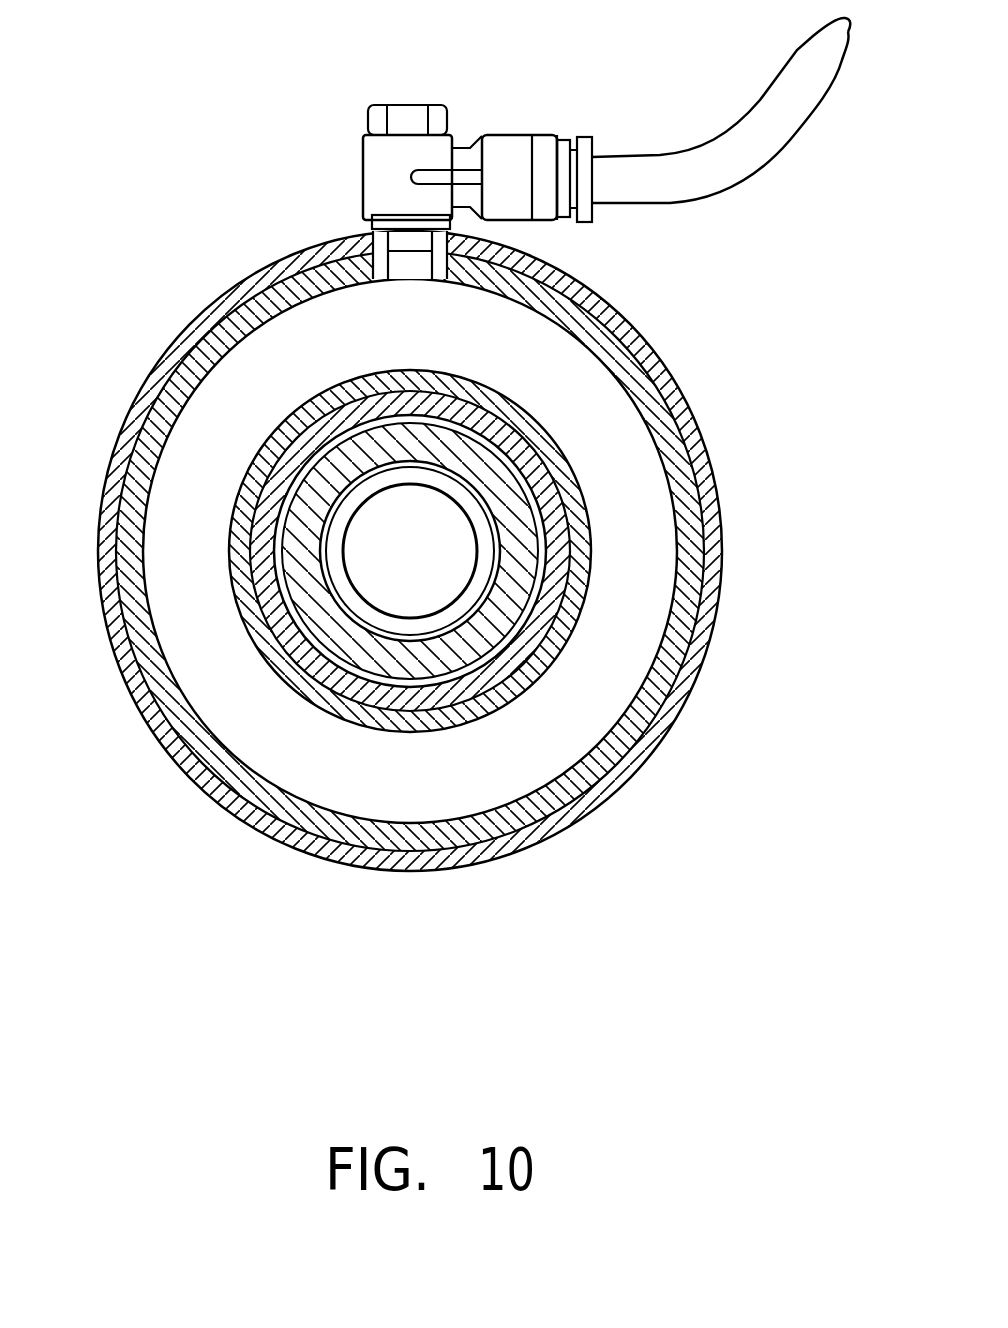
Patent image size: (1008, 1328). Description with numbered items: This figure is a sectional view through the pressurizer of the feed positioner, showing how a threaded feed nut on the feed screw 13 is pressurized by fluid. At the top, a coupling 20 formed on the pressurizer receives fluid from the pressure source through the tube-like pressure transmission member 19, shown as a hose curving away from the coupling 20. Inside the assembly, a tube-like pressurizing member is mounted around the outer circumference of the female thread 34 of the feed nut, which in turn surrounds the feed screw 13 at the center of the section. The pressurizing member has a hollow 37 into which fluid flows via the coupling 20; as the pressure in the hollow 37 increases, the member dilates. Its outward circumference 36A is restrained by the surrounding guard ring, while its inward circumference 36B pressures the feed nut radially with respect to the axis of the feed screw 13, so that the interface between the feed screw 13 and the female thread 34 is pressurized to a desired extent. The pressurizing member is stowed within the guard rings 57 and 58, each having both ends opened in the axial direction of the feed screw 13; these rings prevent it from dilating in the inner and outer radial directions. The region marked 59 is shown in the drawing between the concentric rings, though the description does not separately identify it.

The feed screw 13 is at (443, 530).
The pressure transmission member 19 is at (787, 143).
The coupling 20 is at (385, 160).
The female thread 34 is at (443, 443).
The outward circumference 36A is at (522, 673).
The inward circumference 36B is at (317, 853).
The hollow 37 is at (243, 697).
The guard ring 57 is at (305, 257).
The guard ring 58 is at (531, 638).
The gap 59 is at (537, 534).